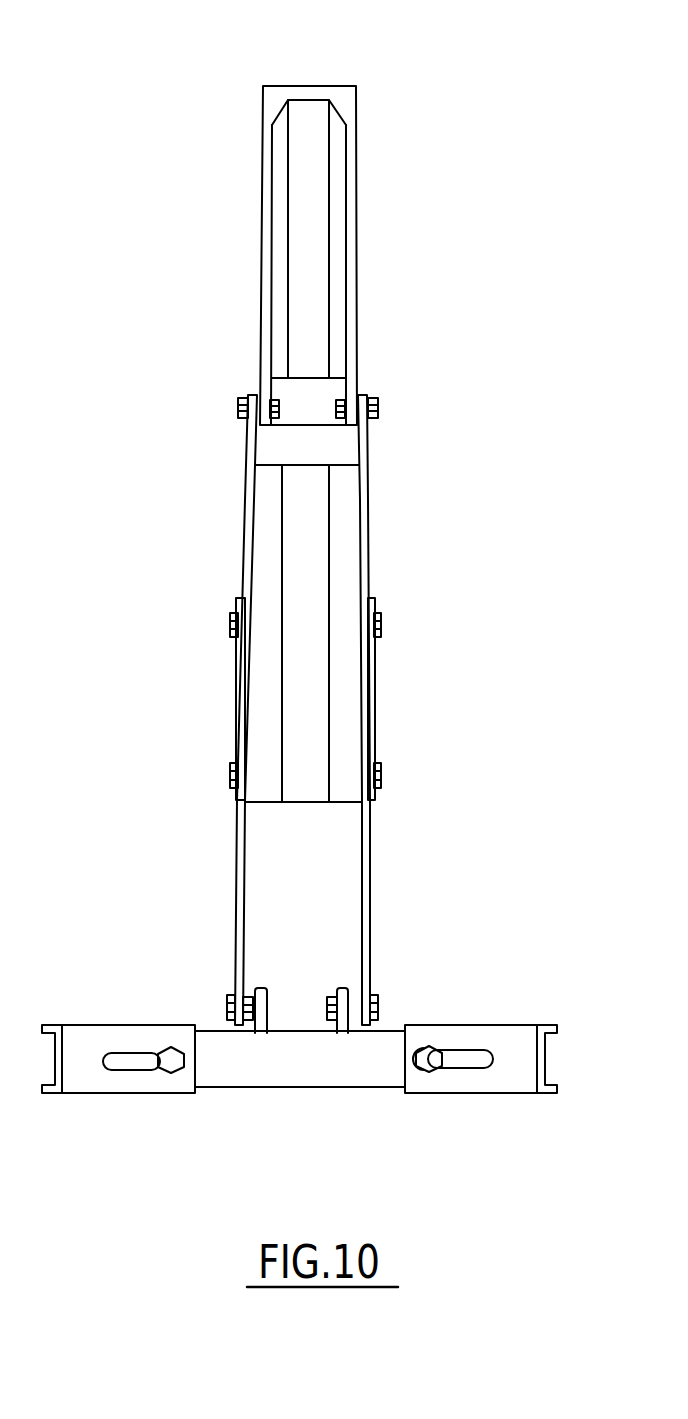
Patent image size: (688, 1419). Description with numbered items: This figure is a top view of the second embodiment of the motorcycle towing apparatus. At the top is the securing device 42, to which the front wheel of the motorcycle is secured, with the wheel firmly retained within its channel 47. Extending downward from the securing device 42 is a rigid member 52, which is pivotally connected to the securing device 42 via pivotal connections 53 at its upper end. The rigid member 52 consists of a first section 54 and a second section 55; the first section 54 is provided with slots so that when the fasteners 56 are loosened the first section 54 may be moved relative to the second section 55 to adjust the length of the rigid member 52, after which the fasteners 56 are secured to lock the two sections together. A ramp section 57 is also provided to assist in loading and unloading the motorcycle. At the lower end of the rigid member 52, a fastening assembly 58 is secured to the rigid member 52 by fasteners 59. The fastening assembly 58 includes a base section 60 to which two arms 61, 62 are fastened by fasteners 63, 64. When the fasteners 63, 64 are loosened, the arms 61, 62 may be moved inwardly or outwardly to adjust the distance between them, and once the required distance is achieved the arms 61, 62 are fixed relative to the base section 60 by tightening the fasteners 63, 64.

The securing device 42 is at (357, 223).
The channel 47 is at (307, 121).
The rigid member 52 is at (222, 700).
The pivotal connections 53 is at (238, 410).
The first section 54 is at (363, 577).
The second section 55 is at (370, 720).
The fasteners 56 is at (230, 623).
The ramp section 57 is at (312, 548).
The fastening assembly 58 is at (247, 1110).
The fasteners 59 is at (228, 1003).
The base section 60 is at (333, 1090).
The arm 61 is at (520, 1072).
The arm 62 is at (82, 1075).
The fastener 63 is at (426, 1070).
The fastener 64 is at (168, 1068).